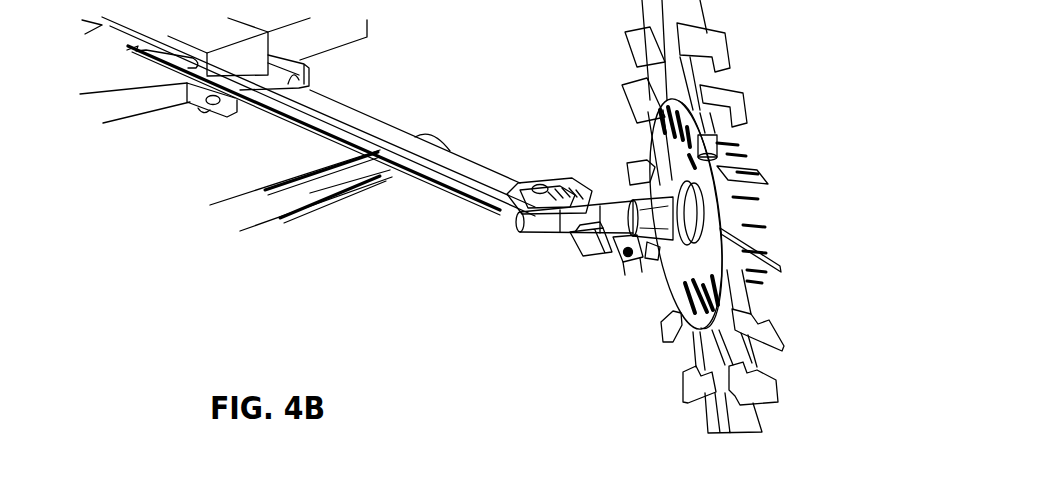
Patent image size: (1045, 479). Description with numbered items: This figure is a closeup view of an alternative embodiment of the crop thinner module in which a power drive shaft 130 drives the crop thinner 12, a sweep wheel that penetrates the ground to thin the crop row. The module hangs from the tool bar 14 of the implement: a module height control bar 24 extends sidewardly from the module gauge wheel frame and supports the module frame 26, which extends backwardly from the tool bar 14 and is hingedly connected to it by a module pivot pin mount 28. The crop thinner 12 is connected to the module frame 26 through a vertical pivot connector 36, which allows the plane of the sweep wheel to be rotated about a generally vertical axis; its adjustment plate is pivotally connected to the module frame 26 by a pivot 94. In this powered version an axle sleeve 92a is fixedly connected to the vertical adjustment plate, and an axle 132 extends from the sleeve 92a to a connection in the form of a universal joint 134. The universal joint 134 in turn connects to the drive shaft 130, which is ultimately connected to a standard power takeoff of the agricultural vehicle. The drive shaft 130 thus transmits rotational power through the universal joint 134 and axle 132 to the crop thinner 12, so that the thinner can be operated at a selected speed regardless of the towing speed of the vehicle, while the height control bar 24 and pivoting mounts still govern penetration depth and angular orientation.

The crop thinner 12 is at (781, 186).
The tool bar 14 is at (153, 92).
The module height control bar 24 is at (316, 187).
The module frame 26 is at (357, 110).
The module pivot pin mount 28 is at (298, 59).
The vertical pivot connector 36 is at (583, 183).
The axle sleeve 92a is at (641, 262).
The pivot 94 is at (630, 258).
The power drive shaft 130 is at (414, 173).
The axle 132 is at (583, 224).
The universal joint 134 is at (528, 222).